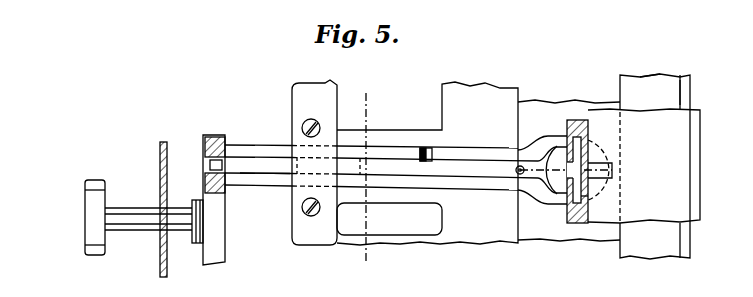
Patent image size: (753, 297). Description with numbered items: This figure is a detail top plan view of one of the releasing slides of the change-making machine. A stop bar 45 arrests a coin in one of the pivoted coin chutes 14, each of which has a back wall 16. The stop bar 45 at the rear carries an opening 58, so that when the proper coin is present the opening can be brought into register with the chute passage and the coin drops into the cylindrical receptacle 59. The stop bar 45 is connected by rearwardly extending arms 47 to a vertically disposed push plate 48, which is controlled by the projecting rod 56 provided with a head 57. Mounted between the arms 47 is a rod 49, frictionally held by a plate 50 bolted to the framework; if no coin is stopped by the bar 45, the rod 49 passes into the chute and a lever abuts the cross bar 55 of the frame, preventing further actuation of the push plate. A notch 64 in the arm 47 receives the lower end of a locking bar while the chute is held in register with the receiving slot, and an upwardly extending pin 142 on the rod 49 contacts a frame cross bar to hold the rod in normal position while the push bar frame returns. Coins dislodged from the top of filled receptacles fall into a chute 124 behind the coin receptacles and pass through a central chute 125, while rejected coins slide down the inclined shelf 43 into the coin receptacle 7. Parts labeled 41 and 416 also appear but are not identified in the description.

The head 57 is at (100, 200).
The projecting rod 56 is at (138, 230).
The push plate 48 is at (228, 138).
The rearwardly extending arms 47 is at (470, 146).
The lower rod 41 is at (262, 178).
The rod 49 is at (394, 174).
The notch 64 is at (425, 148).
The plate 50 is at (295, 93).
The coin receptacle 7 is at (365, 179).
The cross bar 55 is at (483, 240).
The pin 142 is at (518, 166).
The opening 58 is at (548, 206).
The chutes 14 is at (567, 125).
The cylindrical receptacle 59 is at (563, 112).
The back wall 16 is at (588, 128).
The stop bar 45 is at (590, 149).
The flange 416 is at (590, 196).
The inclined shelf 43 is at (655, 213).
The chute 124 is at (654, 88).
The central chute 125 is at (684, 94).